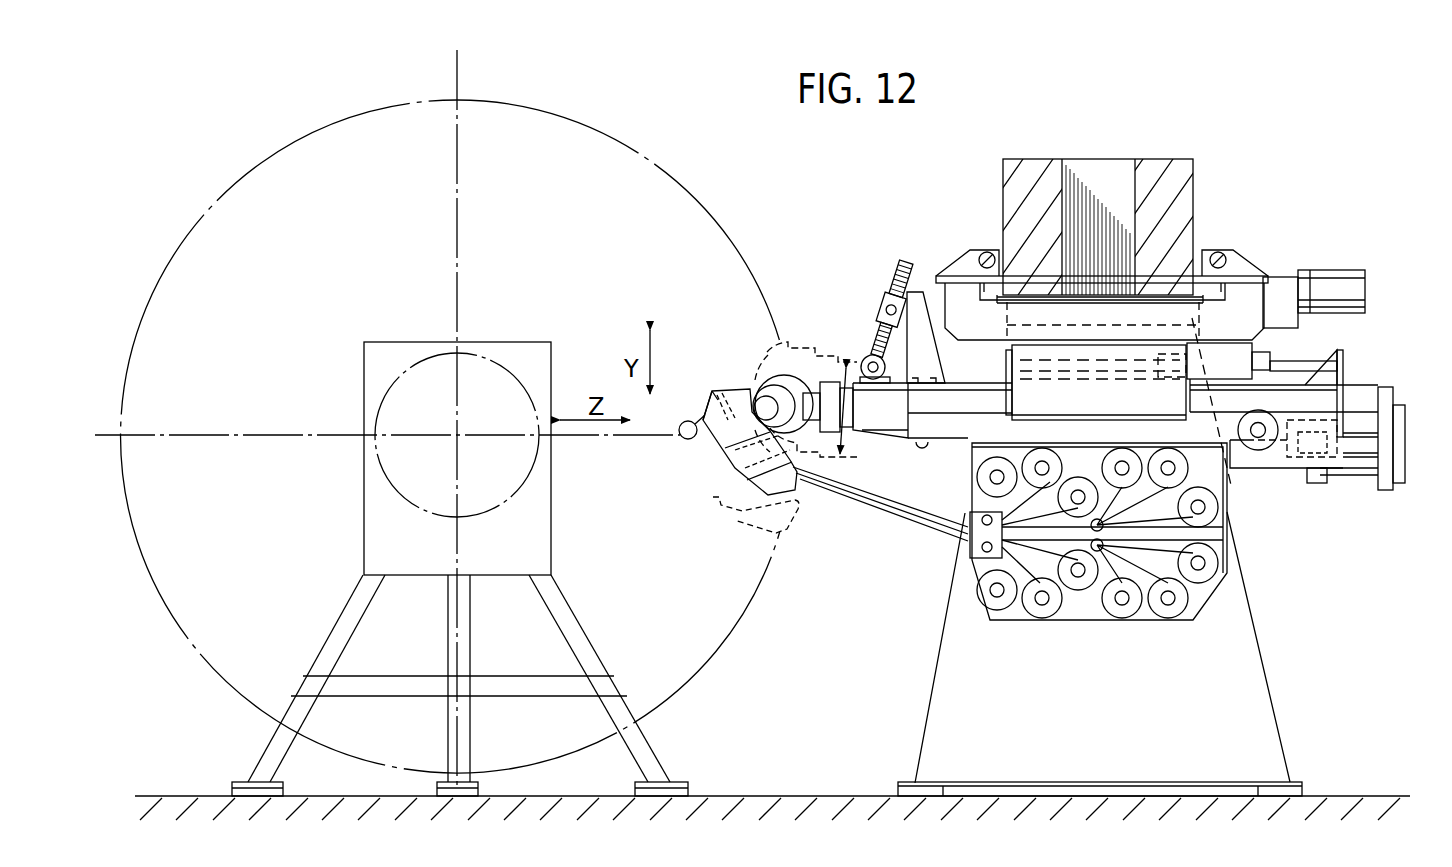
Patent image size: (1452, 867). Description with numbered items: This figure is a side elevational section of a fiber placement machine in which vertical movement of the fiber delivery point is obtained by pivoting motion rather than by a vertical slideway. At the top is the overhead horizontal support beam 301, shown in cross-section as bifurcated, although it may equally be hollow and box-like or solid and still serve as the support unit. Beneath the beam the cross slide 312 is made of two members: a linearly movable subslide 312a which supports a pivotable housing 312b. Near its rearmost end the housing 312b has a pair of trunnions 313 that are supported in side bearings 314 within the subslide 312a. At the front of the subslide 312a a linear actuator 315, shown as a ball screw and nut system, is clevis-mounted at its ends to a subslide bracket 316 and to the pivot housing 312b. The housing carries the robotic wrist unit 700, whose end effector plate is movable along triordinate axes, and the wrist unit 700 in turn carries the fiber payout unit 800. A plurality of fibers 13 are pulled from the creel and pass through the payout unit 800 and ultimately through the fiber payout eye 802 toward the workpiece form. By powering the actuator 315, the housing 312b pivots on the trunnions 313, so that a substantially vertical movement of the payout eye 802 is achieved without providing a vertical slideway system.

The overhead horizontal support beam 301 is at (1195, 181).
The cross slide 312 is at (1349, 378).
The linearly movable subslide 312a is at (998, 437).
The pivotable housing 312b is at (868, 430).
The trunnions 313 is at (1258, 440).
The side bearings 314 is at (1266, 440).
The linear actuator 315 is at (892, 285).
The subslide bracket 316 is at (912, 291).
The robotic wrist unit 700 is at (767, 373).
The fiber payout unit 800 is at (753, 497).
The fiber payout eye 802 is at (702, 448).
The fibers 13 is at (865, 507).